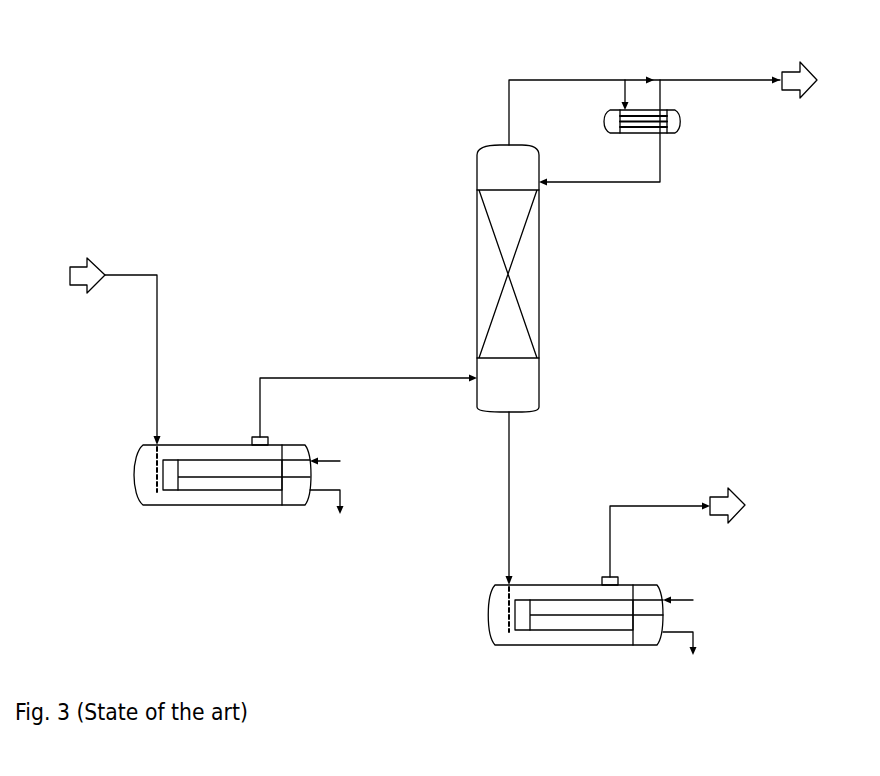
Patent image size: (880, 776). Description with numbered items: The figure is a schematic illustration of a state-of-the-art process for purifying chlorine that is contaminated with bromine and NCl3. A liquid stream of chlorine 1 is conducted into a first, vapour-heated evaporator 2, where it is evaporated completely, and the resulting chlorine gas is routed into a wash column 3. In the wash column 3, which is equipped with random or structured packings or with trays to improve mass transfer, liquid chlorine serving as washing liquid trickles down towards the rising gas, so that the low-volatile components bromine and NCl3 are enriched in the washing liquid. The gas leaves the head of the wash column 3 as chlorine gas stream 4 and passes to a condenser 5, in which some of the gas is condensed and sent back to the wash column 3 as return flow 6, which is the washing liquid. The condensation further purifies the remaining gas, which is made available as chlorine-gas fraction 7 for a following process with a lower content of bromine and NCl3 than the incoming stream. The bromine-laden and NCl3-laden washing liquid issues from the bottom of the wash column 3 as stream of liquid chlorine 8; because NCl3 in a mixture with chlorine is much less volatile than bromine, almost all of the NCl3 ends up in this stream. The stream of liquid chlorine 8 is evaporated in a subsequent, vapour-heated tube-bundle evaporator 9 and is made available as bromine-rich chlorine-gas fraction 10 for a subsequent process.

The stream of chlorine 1 is at (158, 365).
The first, vapour-heated evaporator 2 is at (175, 507).
The wash column 3 is at (540, 307).
The chlorine gas stream 4 is at (543, 80).
The condenser 5 is at (607, 115).
The return flow 6 is at (640, 182).
The chlorine-gas fraction 7 is at (745, 82).
The stream of liquid chlorine 8 is at (510, 477).
The vapour-heated tube-bundle evaporator 9 is at (488, 602).
The bromine-rich chlorine-gas fraction 10 is at (660, 505).